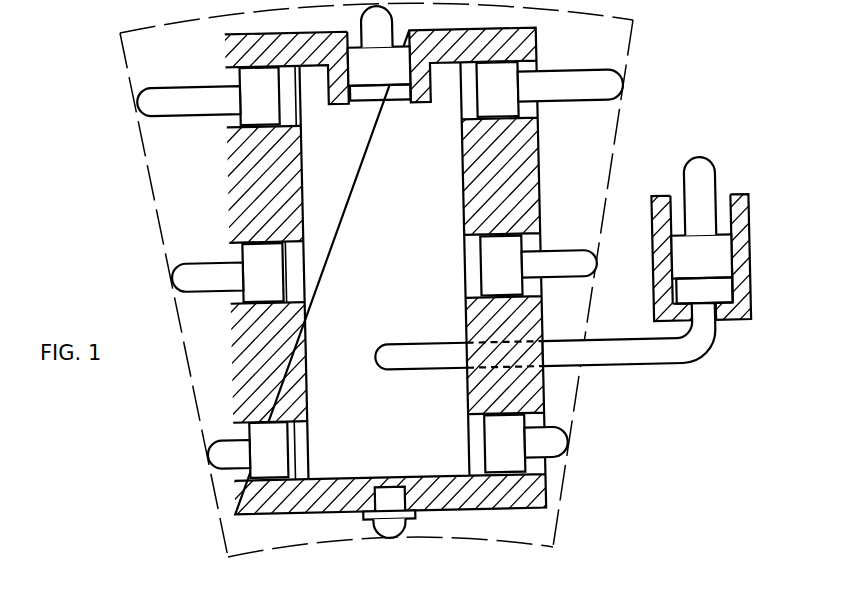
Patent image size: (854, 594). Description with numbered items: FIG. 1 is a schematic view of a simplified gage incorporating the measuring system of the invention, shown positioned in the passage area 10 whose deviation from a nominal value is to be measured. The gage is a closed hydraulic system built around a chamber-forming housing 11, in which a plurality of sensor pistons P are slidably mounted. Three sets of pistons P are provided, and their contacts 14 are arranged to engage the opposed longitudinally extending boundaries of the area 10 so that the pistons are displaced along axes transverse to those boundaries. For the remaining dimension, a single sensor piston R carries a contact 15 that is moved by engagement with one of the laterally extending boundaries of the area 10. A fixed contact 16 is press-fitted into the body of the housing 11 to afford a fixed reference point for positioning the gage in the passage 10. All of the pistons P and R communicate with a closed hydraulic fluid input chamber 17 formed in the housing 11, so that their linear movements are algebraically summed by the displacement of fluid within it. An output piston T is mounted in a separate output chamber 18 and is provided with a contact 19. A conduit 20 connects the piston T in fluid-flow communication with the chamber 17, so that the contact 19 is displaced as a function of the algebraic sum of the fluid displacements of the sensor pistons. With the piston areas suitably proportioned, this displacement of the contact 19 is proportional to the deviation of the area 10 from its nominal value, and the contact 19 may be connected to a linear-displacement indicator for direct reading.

The area 10 is at (154, 186).
The chamber-forming housing 11 is at (538, 178).
The contacts 14 is at (588, 72).
The contact 15 is at (393, 13).
The fixed contact 16 is at (404, 530).
The hydraulic fluid input chamber 17 is at (393, 203).
The output chamber 18 is at (653, 292).
The contact 19 is at (718, 172).
The conduit 20 is at (624, 364).